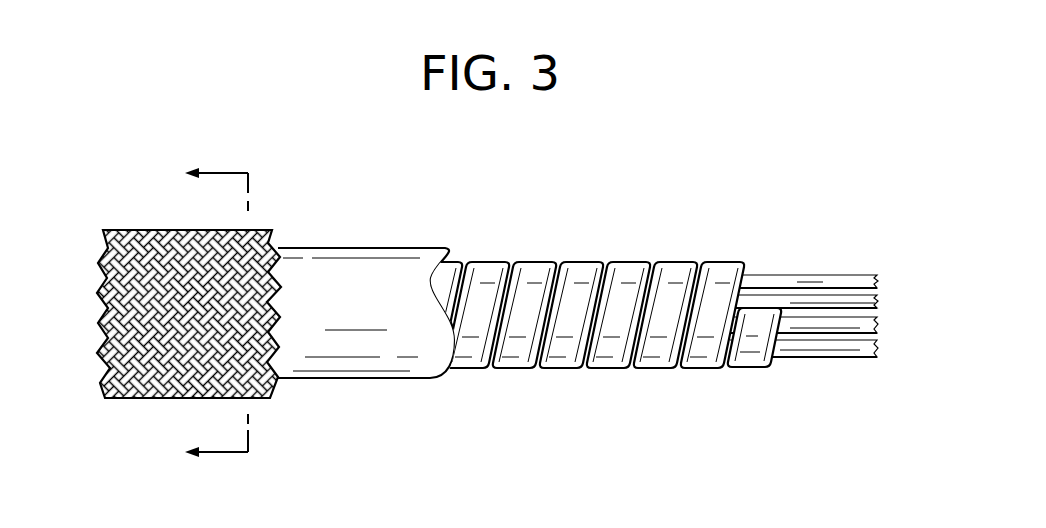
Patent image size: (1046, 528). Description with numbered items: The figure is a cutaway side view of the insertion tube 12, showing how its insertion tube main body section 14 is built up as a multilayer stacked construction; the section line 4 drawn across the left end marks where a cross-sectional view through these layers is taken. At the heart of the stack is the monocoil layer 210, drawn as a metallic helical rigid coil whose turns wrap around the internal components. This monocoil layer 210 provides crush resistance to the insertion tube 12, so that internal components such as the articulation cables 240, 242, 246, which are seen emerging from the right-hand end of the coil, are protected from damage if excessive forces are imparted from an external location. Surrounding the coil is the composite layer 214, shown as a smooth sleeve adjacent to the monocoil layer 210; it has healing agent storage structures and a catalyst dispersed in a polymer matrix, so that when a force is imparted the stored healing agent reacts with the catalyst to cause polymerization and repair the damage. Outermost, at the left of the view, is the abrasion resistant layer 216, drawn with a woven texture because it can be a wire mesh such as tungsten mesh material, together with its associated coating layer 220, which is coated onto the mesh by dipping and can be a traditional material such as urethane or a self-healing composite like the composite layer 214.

The section line 4- 4 is at (216, 314).
The insertion tube 12 is at (491, 301).
The insertion tube main body section 14 is at (491, 301).
The monocoil layer 210 is at (513, 370).
The composite layer 214 is at (357, 379).
The abrasion resistant layer 216 is at (173, 349).
The coating layer 220 is at (128, 399).
The articulation cable 240 is at (858, 304).
The articulation cable 242 is at (835, 346).
The articulation cable 246 is at (803, 281).